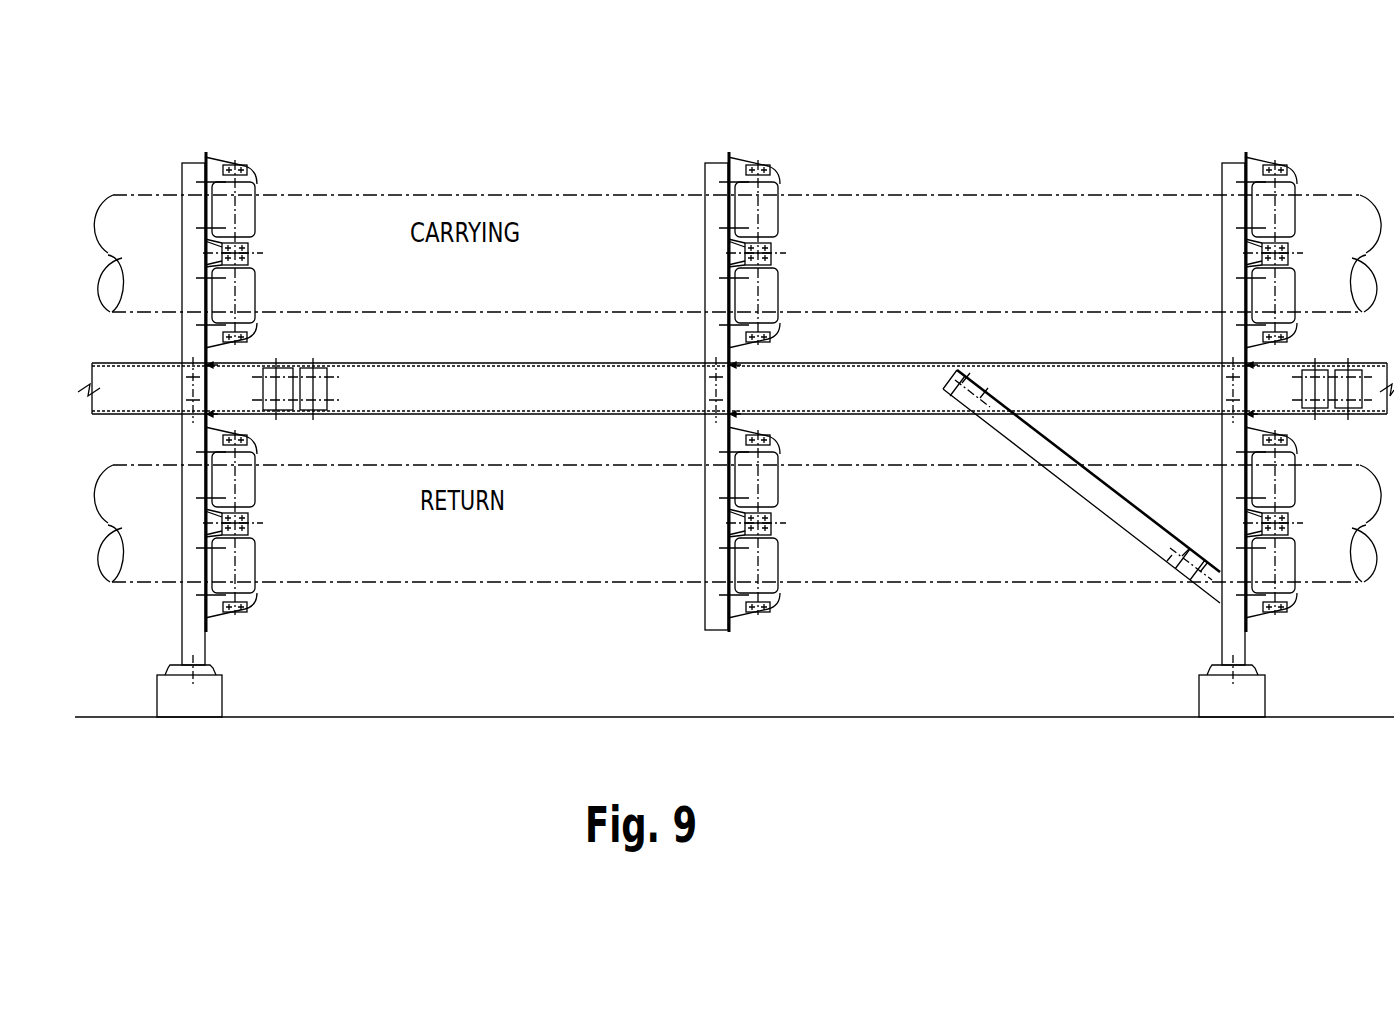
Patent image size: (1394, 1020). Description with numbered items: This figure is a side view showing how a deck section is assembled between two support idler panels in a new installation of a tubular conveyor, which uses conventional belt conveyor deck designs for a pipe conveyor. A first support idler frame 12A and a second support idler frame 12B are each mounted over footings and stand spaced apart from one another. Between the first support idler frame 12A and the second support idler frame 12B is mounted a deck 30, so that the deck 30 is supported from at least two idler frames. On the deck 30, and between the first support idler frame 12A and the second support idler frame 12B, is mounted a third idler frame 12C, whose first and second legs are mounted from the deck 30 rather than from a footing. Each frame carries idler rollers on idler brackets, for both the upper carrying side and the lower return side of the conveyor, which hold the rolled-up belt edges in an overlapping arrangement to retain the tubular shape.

The first support idler frame 12A is at (199, 160).
The second support idler frame 12B is at (1225, 160).
The third idler frame 12C is at (698, 168).
The deck 30 is at (507, 357).